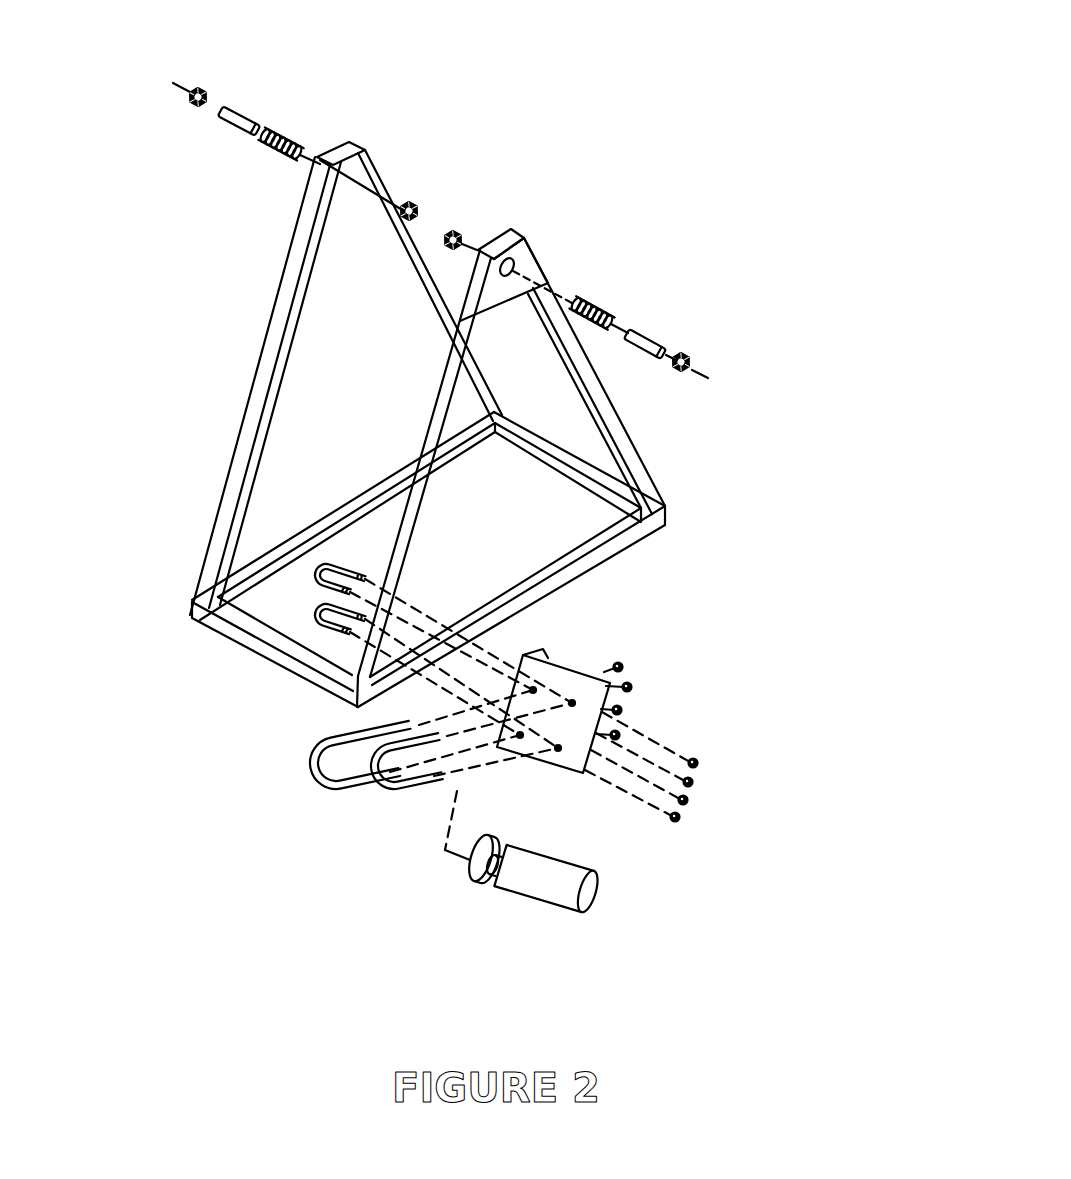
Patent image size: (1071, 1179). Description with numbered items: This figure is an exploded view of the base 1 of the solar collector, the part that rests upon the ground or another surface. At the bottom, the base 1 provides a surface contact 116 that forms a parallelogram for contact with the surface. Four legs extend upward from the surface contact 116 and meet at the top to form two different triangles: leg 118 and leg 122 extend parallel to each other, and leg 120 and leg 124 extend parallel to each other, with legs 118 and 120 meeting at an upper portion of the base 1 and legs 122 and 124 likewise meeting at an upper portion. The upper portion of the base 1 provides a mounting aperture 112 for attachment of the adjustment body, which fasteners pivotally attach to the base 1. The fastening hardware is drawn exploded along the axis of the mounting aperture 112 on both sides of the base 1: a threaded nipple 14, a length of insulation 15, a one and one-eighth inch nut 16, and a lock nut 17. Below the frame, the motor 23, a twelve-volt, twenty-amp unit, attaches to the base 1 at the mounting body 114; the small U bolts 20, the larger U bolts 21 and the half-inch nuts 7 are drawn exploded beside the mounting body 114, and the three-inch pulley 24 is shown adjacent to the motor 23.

The base 1 is at (187, 630).
The half-inch nut 7 is at (627, 681).
The threaded nipple 14 is at (293, 133).
The insulation 15 is at (248, 106).
The nut 16 is at (207, 72).
The lock nut 17 is at (430, 188).
The U bolt 20 is at (317, 583).
The U bolt 21 is at (372, 797).
The motor 23 is at (583, 916).
The pulley 24 is at (470, 858).
The mounting aperture 112 is at (528, 252).
The mounting body 114 is at (560, 672).
The surface contact 116 is at (632, 544).
The leg 118 is at (633, 446).
The leg 120 is at (429, 425).
The leg 122 is at (379, 181).
The leg 124 is at (268, 340).